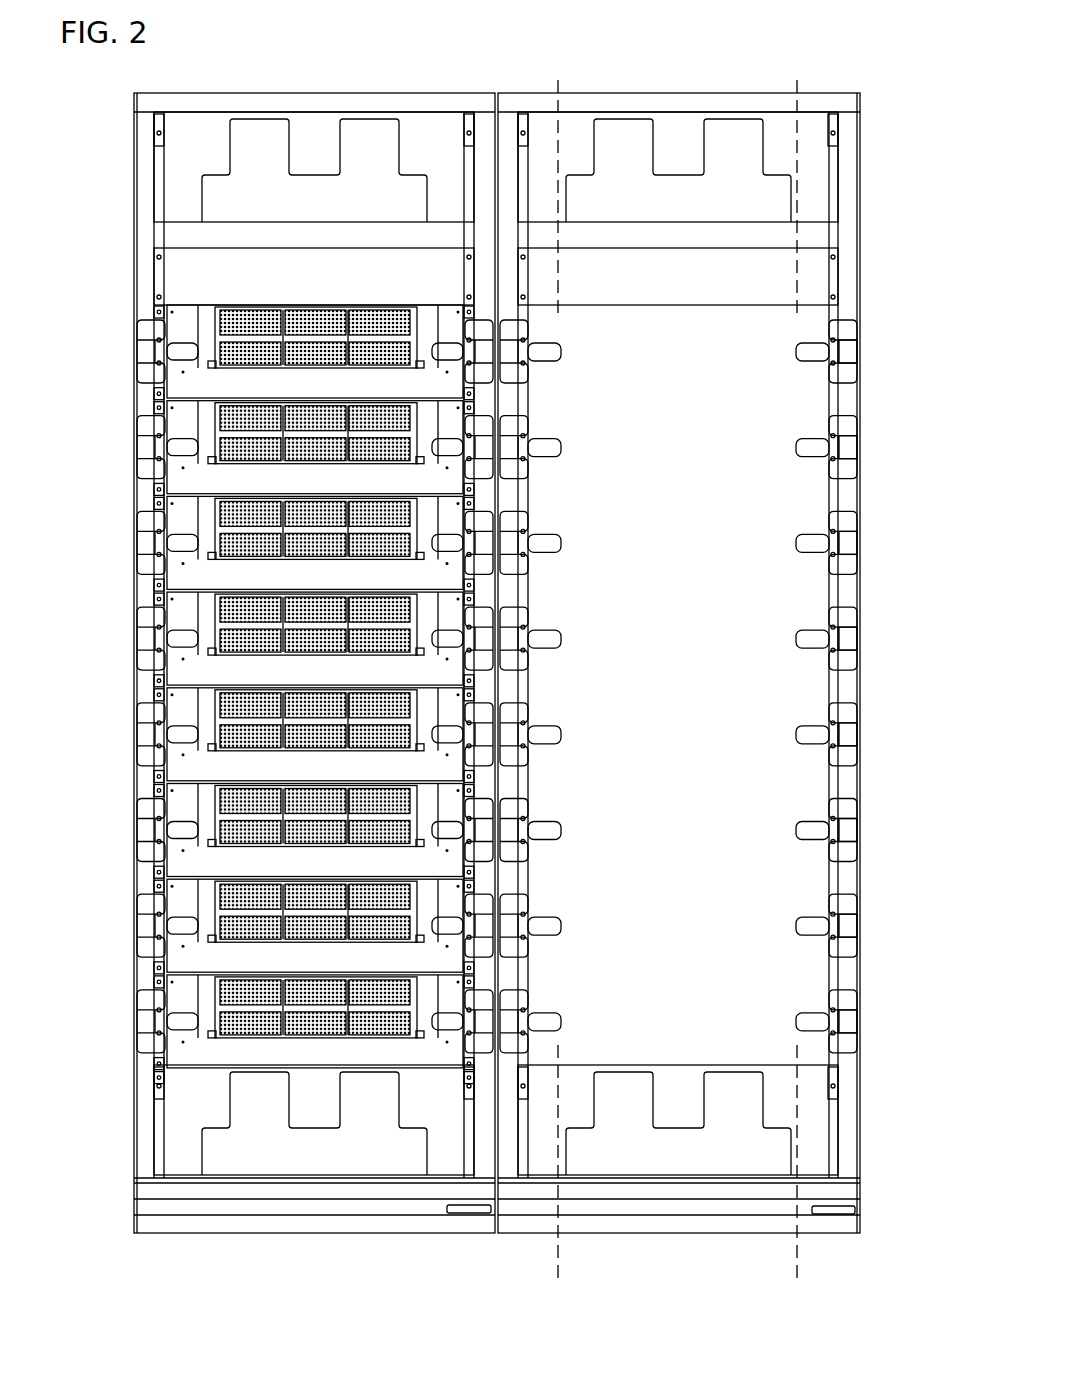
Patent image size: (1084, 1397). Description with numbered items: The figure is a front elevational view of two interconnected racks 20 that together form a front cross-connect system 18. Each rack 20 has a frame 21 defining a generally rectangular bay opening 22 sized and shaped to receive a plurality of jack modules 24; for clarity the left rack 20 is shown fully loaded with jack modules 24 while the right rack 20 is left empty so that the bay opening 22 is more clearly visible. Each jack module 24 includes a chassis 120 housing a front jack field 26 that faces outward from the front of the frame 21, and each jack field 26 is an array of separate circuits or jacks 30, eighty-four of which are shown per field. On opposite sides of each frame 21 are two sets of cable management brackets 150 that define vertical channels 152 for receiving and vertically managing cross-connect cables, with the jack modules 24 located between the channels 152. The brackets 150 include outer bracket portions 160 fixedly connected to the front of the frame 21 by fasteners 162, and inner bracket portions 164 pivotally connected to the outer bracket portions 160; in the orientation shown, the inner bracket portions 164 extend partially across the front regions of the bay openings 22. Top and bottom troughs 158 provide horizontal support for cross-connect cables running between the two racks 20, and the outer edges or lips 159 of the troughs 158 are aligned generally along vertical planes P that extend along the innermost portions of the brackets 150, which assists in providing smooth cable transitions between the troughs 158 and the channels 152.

The front cross-connect system 18 is at (882, 87).
The rack 20 is at (282, 87).
The frame 21 is at (124, 681).
The bay opening 22 is at (828, 683).
The jack module 24 is at (424, 698).
The front jack field 26 is at (385, 745).
The jack 30 is at (395, 757).
The chassis 120 is at (478, 596).
The cable management bracket 150 is at (570, 353).
The vertical channel 152 is at (148, 308).
The trough 158 is at (368, 135).
The lip 159 is at (797, 222).
The outer bracket portion 160 is at (793, 350).
The fastener 162 is at (827, 367).
The inner bracket portion 164 is at (848, 353).
The vertical plane P is at (562, 1117).